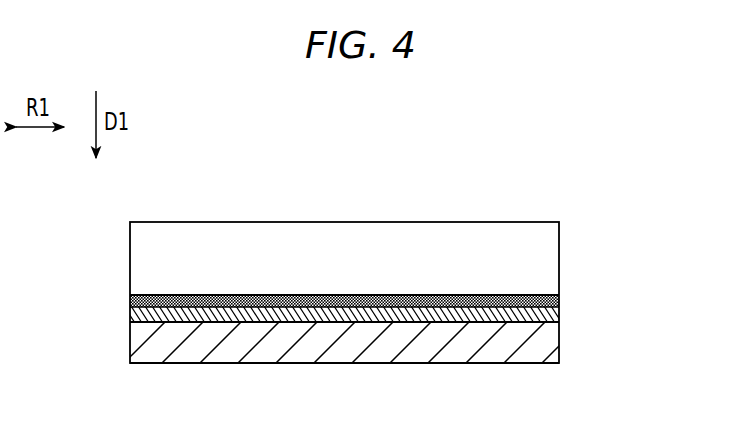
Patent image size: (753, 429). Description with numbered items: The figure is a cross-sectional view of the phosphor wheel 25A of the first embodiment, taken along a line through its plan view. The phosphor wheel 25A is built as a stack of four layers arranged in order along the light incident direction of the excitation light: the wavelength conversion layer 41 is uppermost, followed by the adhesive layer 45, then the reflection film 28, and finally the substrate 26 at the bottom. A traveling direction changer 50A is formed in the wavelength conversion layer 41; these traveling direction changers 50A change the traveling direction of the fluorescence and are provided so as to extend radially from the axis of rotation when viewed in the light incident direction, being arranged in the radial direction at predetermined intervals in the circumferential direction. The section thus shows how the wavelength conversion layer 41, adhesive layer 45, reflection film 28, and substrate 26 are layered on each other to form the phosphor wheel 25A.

The traveling direction changer 50A is at (226, 252).
The wavelength conversion layer 41 is at (155, 258).
The adhesive layer 45 is at (130, 300).
The reflection film 28 is at (130, 313).
The substrate 26 is at (130, 343).
The phosphor wheel 25A is at (381, 360).